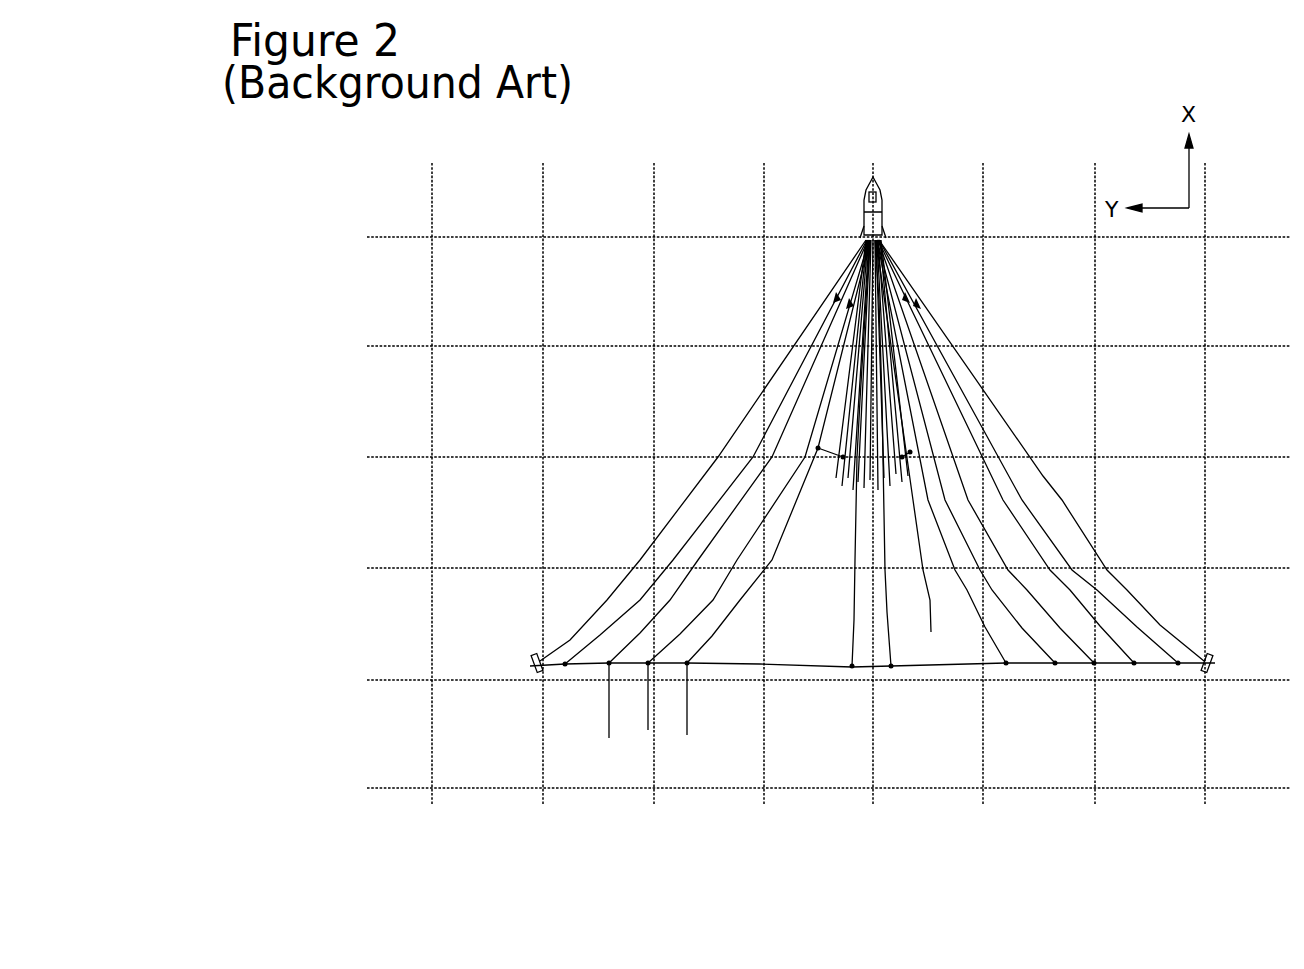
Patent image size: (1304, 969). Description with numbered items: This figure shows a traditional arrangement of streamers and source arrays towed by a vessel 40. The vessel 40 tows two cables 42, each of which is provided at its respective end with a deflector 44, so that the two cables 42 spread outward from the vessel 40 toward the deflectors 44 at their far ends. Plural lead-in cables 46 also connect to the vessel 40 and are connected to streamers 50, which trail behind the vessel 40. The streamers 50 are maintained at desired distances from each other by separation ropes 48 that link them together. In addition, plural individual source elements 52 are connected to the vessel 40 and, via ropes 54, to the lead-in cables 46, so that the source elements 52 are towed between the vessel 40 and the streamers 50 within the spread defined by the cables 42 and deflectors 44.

The vessel 40 is at (913, 186).
The cable 42 is at (728, 432).
The deflector 44 is at (530, 666).
The lead-in cable 46 is at (1060, 548).
The separation rope 48 is at (1022, 662).
The streamer 50 is at (688, 712).
The individual source element 52 is at (885, 442).
The rope 54 is at (931, 632).